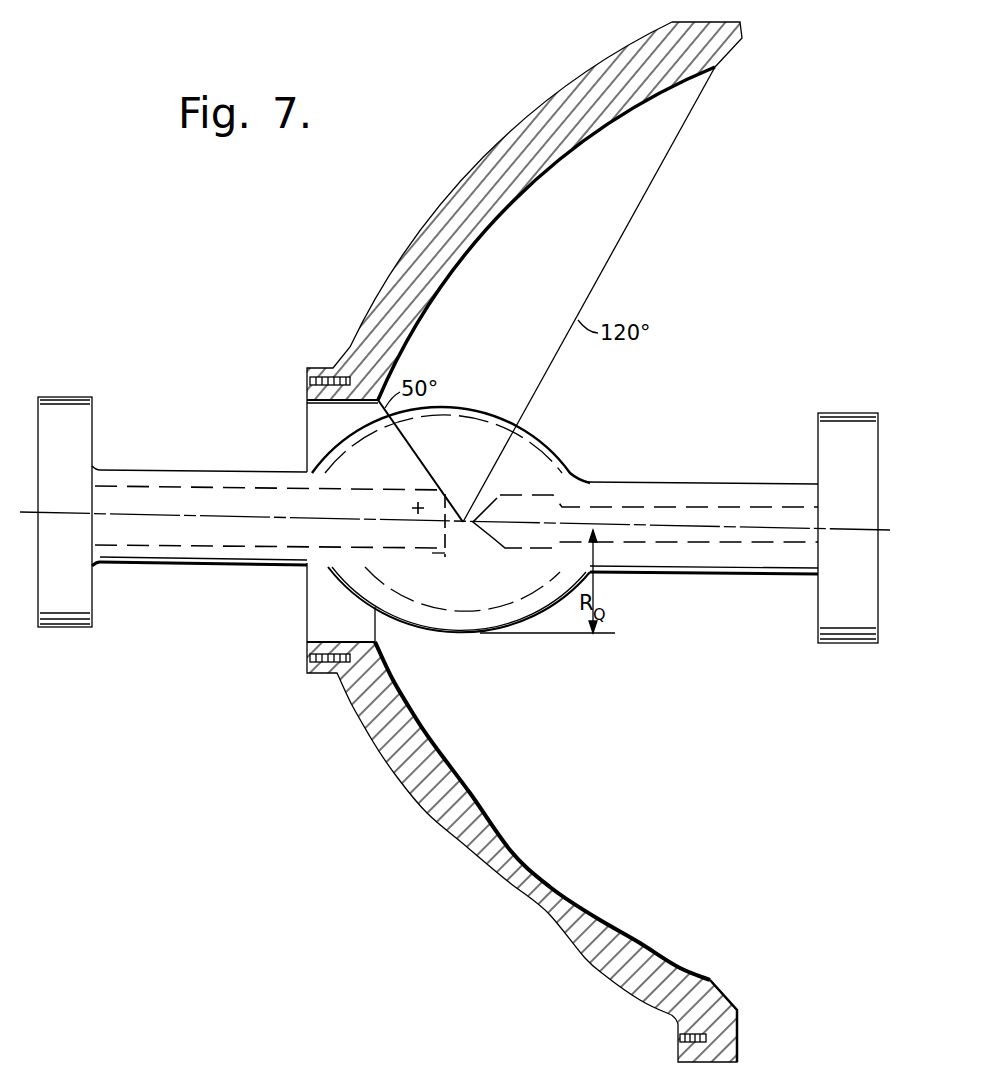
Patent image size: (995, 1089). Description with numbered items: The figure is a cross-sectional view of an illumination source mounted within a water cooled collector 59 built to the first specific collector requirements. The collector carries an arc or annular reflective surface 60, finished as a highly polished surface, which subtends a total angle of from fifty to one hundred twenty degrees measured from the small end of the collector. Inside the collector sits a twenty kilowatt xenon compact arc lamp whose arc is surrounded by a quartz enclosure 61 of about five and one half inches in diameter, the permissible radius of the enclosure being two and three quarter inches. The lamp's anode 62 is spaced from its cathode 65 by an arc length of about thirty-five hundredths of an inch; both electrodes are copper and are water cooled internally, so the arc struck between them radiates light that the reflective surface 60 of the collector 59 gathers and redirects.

The water cooled collector 59 is at (363, 283).
The annular reflective surface 60 is at (484, 236).
The quartz enclosure 61 is at (570, 450).
The anode 62 is at (431, 539).
The cathode 65 is at (495, 543).